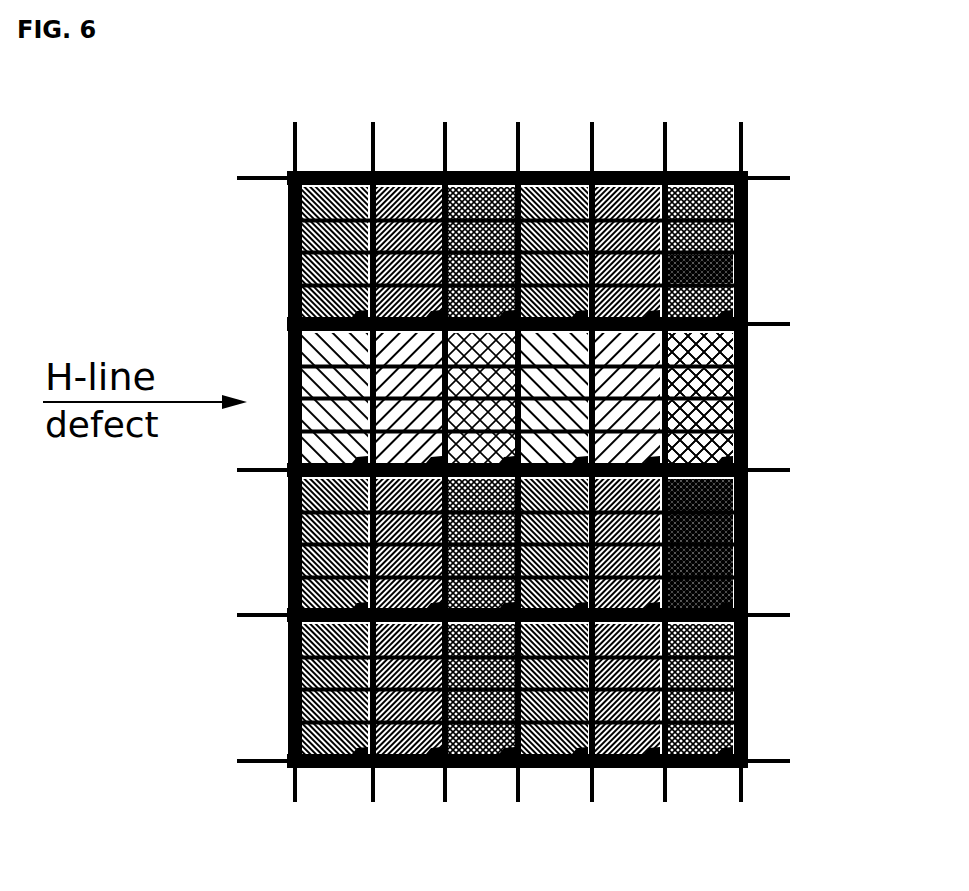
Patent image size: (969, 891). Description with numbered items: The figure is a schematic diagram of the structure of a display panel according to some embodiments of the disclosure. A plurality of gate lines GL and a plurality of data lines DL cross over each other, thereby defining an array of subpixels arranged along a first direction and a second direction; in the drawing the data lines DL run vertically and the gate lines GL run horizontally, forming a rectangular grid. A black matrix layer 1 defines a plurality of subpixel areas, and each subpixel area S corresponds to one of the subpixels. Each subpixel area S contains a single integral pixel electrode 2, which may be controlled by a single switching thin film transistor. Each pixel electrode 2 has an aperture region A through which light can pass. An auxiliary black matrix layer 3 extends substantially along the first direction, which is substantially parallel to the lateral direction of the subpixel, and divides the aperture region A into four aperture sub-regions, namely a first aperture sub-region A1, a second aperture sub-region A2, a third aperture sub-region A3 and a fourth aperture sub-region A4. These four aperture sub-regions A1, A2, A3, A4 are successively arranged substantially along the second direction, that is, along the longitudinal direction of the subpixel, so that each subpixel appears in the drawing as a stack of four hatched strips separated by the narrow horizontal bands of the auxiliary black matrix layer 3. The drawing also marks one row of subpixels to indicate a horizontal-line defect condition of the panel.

The black matrix layer 1 is at (750, 235).
The pixel electrode 2 is at (733, 267).
The auxiliary black matrix layer 3 is at (750, 251).
The aperture region A is at (832, 344).
The first aperture sub-region A1 is at (735, 359).
The second aperture sub-region A2 is at (735, 380).
The third aperture sub-region A3 is at (735, 428).
The fourth aperture sub-region A4 is at (735, 448).
The subpixel area S is at (735, 520).
The data line DL is at (518, 451).
The gate line GL is at (287, 324).